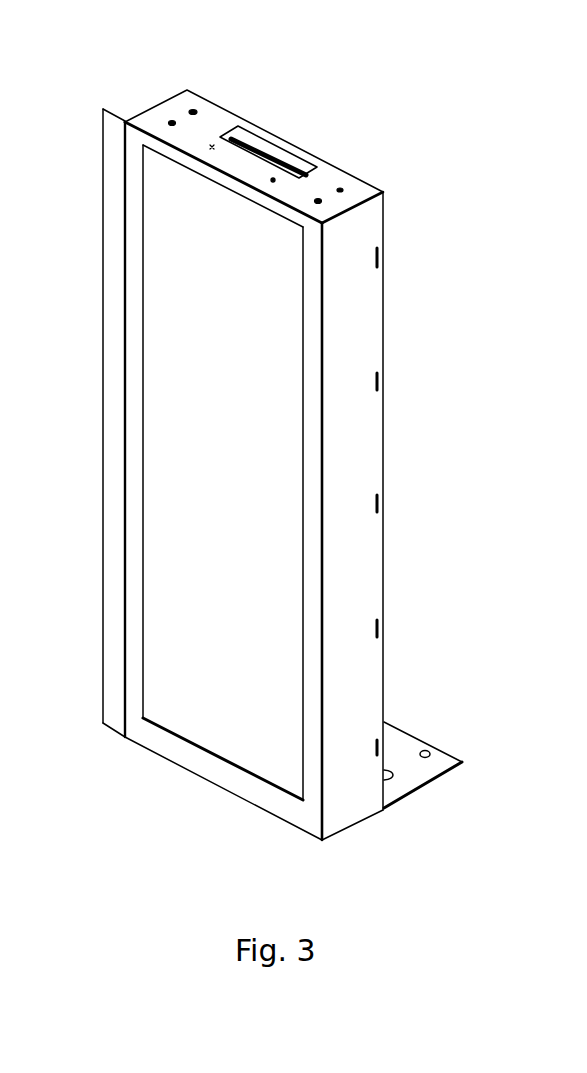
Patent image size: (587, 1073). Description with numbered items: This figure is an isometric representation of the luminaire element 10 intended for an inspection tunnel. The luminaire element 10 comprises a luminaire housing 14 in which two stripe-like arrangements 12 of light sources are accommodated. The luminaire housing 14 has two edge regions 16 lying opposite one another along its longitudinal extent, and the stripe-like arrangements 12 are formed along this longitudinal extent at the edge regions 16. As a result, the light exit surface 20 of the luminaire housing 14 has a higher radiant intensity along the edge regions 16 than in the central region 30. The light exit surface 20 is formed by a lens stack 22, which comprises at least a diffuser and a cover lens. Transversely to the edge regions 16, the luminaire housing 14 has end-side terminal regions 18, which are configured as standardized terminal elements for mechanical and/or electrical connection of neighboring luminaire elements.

The luminaire element 10 is at (265, 84).
The stripe-like arrangement 12 is at (7, 76).
The luminaire housing 14 is at (177, 98).
The edge region 16 is at (311, 372).
The end-side terminal region 18 is at (327, 173).
The light exit surface 20 is at (97, 423).
The lens stack 22 is at (183, 428).
The central region 30 is at (236, 488).